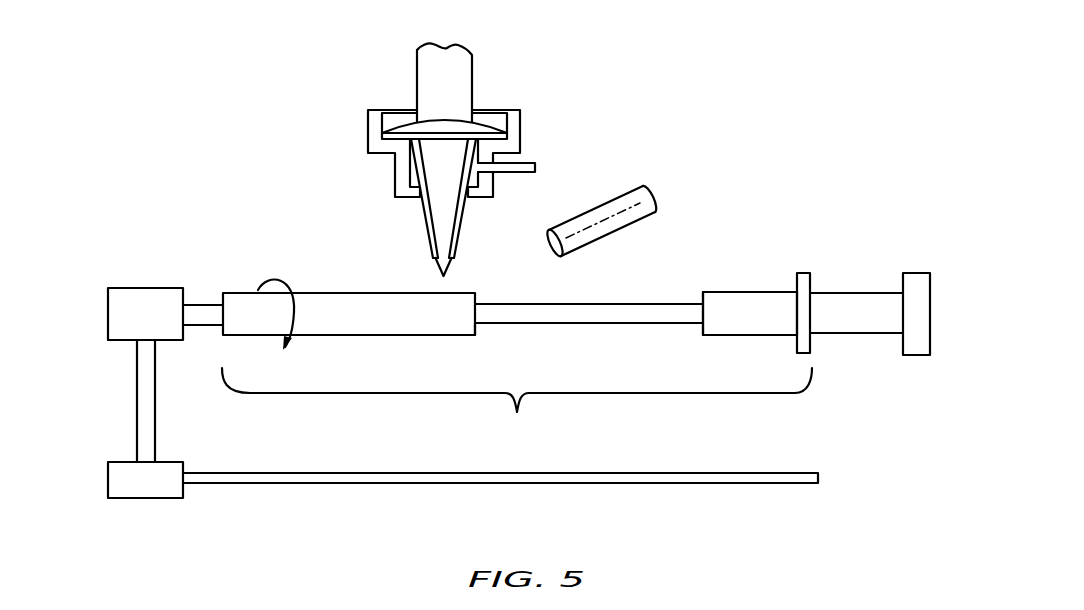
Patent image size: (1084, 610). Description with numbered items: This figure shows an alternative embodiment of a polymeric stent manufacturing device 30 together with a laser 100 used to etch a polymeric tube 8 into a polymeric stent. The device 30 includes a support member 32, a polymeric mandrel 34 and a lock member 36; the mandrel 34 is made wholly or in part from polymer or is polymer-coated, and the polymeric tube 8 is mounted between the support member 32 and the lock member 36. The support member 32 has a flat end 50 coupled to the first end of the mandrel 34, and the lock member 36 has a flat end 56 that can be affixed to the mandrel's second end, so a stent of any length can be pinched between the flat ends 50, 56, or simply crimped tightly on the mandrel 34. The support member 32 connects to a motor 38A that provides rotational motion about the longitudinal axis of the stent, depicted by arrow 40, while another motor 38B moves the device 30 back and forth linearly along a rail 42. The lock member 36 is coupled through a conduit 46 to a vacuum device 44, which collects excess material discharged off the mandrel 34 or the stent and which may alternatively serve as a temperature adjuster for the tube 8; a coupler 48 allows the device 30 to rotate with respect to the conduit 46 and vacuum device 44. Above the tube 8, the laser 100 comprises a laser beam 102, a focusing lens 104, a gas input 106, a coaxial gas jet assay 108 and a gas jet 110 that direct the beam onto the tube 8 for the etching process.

The polymeric tube 8 is at (630, 154).
The polymeric stent manufacturing device 30 is at (530, 448).
The support member 32 is at (345, 293).
The polymeric mandrel 34 is at (577, 303).
The lock member 36 is at (752, 292).
The motor 38A is at (145, 288).
The motor 38B is at (170, 462).
The arrow 40 is at (260, 288).
The rail 42 is at (562, 483).
The vacuum device 44 is at (915, 273).
The conduit 46 is at (857, 293).
The coupler 48 is at (803, 273).
The flat end 50 is at (477, 331).
The flat end 56 is at (703, 297).
The laser 100 is at (330, 142).
The laser beam 102 is at (428, 70).
The focusing lens 104 is at (487, 128).
The gas input 106 is at (527, 165).
The coaxial gas jet assay 108 is at (377, 147).
The gas jet 110 is at (457, 227).